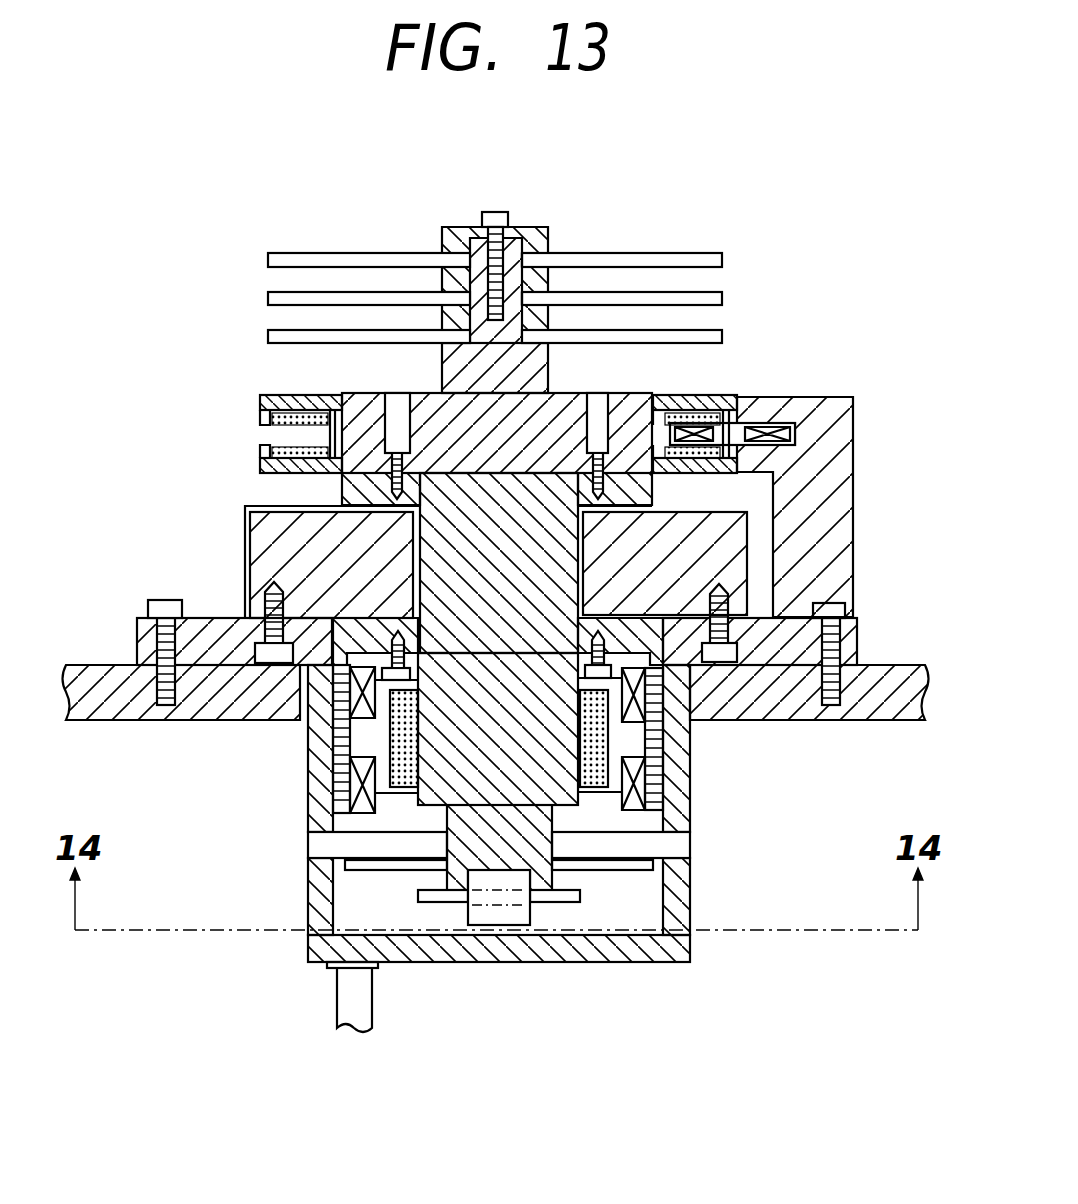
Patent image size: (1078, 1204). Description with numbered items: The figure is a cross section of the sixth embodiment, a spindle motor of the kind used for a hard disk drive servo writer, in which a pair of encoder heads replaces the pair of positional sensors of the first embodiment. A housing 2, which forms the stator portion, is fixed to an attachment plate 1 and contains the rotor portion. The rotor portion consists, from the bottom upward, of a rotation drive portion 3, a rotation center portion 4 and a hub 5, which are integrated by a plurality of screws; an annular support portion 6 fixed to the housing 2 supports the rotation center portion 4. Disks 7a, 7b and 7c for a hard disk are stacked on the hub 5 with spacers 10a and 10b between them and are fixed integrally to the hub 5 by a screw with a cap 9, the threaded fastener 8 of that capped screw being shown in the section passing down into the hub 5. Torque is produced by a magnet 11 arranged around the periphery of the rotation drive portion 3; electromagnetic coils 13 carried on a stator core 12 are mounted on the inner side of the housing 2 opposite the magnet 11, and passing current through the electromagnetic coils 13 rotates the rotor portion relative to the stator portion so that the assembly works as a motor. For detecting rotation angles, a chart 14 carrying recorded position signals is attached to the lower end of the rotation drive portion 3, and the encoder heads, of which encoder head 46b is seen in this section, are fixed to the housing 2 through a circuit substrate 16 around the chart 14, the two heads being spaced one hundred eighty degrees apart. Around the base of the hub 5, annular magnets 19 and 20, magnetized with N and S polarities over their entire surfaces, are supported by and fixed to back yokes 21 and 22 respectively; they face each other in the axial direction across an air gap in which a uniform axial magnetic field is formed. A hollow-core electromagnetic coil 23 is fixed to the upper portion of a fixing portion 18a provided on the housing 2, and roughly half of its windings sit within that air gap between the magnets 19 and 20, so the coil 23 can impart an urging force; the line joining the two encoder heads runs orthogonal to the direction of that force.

The attachment plate 1 is at (108, 688).
The housing 2 is at (322, 947).
The rotation drive portion 3 is at (660, 797).
The rotation center portion 4 is at (540, 488).
The hub 5 is at (470, 362).
The annular support portion 6 is at (705, 557).
The disk 7a is at (290, 258).
The disk 7b is at (268, 295).
The disk 7c is at (268, 337).
The screw 8 is at (490, 260).
The screw with a cap 9 is at (463, 235).
The spacer 10a is at (543, 265).
The spacer 10b is at (543, 300).
The magnet 11 is at (340, 770).
The stator core 12 is at (655, 740).
The electromagnetic coils 13 is at (633, 803).
The chart 14 is at (428, 898).
The circuit substrate 16 is at (620, 863).
The fixing portion 18a is at (825, 412).
The annular magnet 19 is at (287, 427).
The annular magnet 20 is at (262, 438).
The back yoke 21 is at (287, 397).
The back yoke 22 is at (263, 462).
The hollow-core electromagnetic coil 23 is at (763, 433).
The encoder head 46b is at (510, 915).